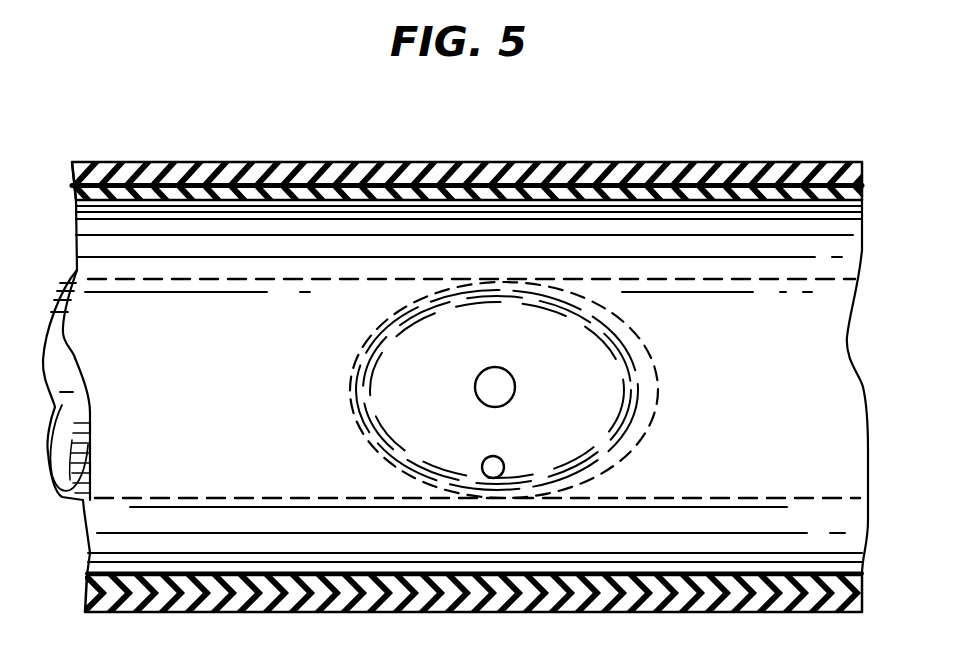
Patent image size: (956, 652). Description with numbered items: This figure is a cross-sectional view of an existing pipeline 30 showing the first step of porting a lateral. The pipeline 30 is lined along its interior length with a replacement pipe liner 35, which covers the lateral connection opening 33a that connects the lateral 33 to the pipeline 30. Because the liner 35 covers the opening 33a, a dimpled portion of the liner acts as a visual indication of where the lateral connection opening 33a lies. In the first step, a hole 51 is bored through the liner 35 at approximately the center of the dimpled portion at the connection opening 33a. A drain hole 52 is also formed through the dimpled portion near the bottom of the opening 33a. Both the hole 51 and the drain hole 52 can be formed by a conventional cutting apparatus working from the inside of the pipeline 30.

The pipeline 30 is at (480, 162).
The replacement pipe liner 35 is at (608, 190).
The lateral connecting pipe 33 is at (87, 270).
The lateral connection opening 33a is at (603, 338).
The hole 51 is at (500, 371).
The drain hole 52 is at (494, 457).